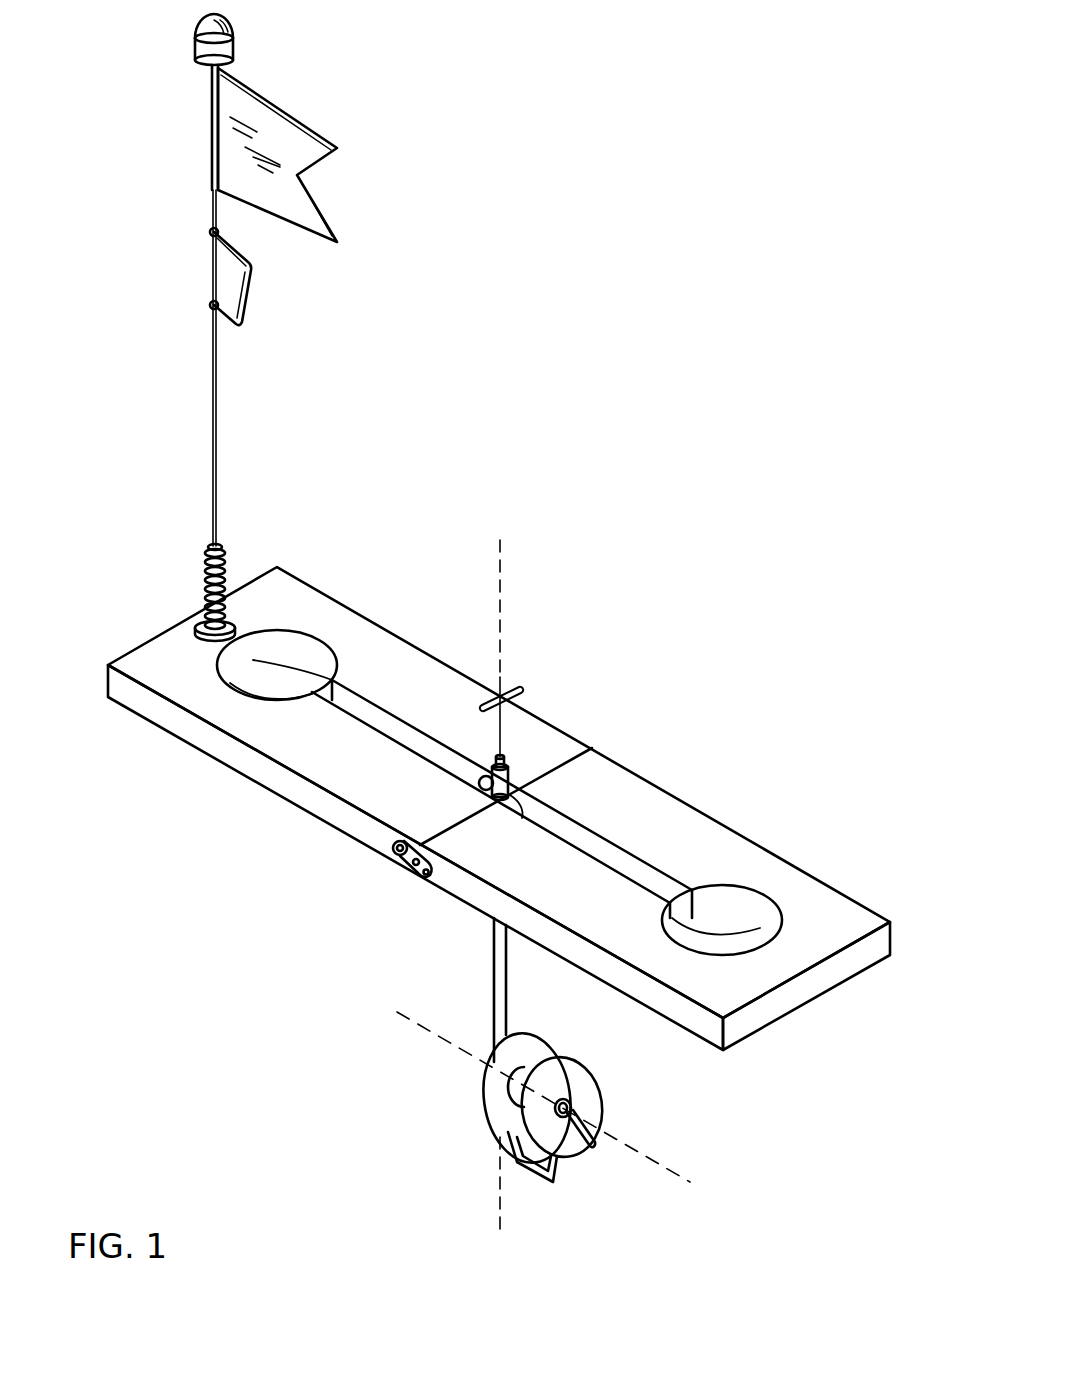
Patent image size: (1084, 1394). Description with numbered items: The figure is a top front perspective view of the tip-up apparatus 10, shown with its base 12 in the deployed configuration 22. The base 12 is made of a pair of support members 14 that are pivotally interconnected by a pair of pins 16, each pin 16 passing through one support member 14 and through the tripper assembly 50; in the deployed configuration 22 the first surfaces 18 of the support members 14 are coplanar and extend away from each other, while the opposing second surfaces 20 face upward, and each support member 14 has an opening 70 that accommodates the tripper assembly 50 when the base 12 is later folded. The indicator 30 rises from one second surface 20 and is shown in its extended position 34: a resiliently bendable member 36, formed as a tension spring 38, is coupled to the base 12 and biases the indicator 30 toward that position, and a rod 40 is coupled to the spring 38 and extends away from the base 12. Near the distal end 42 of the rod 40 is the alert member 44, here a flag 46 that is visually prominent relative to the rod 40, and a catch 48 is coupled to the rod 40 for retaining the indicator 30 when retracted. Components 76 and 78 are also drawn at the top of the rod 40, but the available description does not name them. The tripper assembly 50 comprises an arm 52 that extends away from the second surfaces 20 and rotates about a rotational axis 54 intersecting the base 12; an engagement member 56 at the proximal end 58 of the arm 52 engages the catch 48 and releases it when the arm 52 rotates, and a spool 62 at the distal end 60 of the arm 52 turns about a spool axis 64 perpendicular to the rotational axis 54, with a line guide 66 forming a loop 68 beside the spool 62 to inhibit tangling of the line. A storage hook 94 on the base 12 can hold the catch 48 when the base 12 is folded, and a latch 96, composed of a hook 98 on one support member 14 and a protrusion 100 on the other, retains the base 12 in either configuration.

The tip-up apparatus 10 is at (755, 105).
The base 12 is at (738, 810).
The support members 14 is at (185, 725).
The pins 16 is at (402, 866).
The first surface 18 is at (237, 775).
The second surface 20 is at (352, 637).
The deployed configuration 22 is at (808, 1037).
The indicator 30 is at (374, 46).
The extended position 34 is at (130, 161).
The resiliently bendable member 36 is at (244, 556).
The tension spring 38 is at (200, 572).
The rod 40 is at (213, 438).
The distal end 42 is at (210, 70).
The alert member 44 is at (354, 126).
The flag 46 is at (283, 198).
The catch 48 is at (252, 290).
The tripper assembly 50 is at (425, 1054).
The arm 52 is at (493, 1022).
The rotational axis 54 is at (505, 595).
The engagement member 56 is at (522, 688).
The proximal end 58 is at (527, 797).
The distal end 60 is at (487, 1065).
The spool 62 is at (587, 1088).
The spool axis 64 is at (673, 1172).
The line guide 66 is at (553, 1198).
The loop 68 is at (537, 1180).
The opening 70 is at (258, 664).
The cap 76 is at (225, 48).
The light 78 is at (205, 14).
The storage hook 94 is at (480, 784).
The latch 96 is at (400, 905).
The hook 98 is at (402, 837).
The protrusion 100 is at (398, 856).